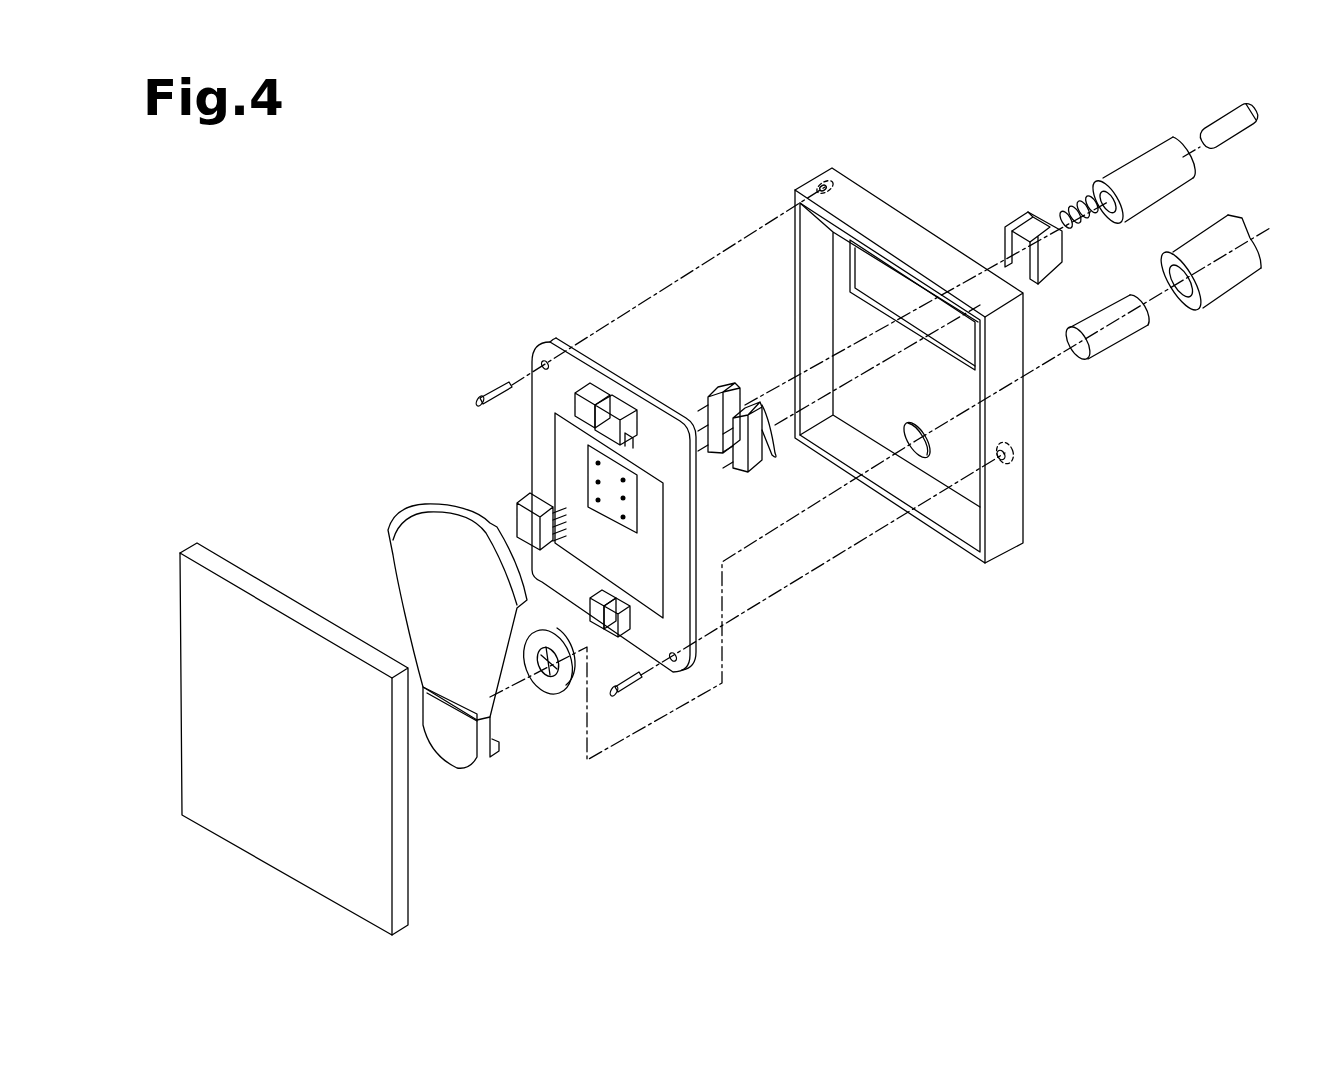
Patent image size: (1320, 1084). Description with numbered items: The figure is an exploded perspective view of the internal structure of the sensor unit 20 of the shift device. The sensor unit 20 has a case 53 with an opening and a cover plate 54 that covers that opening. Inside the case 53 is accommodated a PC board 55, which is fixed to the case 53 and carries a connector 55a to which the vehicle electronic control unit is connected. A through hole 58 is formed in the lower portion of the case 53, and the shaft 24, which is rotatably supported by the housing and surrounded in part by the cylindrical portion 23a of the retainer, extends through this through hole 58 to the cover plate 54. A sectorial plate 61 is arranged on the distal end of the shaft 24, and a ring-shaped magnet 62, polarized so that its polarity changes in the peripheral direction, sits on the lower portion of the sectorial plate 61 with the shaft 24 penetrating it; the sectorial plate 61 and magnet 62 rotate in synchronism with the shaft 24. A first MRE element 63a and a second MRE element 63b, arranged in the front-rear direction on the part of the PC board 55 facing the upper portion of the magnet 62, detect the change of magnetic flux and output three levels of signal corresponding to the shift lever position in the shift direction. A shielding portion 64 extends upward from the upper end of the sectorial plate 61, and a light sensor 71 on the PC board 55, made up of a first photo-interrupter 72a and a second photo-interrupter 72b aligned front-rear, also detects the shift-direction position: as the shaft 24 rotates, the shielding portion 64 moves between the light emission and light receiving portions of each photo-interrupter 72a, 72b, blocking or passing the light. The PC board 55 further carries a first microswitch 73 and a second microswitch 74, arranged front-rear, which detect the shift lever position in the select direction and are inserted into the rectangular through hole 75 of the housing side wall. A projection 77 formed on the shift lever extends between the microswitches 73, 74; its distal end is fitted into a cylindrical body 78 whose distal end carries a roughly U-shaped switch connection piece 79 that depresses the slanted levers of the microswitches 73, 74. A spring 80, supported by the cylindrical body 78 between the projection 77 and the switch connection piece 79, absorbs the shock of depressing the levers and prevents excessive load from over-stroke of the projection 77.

The sensor unit 20 is at (428, 312).
The cylindrical portion 23a is at (1237, 290).
The shaft 24 is at (1113, 338).
The case 53 is at (795, 318).
The cover plate 54 is at (213, 562).
The PC board 55 is at (542, 402).
The connector 55a is at (517, 518).
The through hole 58 is at (915, 422).
The sectorial plate 61 is at (380, 560).
The magnet 62 is at (540, 693).
The first MRE element 63a is at (597, 590).
The second MRE element 63b is at (613, 625).
The shielding portion 64 is at (490, 523).
The light sensor 71 is at (578, 388).
The first photo-interrupter 72a is at (625, 400).
The second photo-interrupter 72b is at (600, 387).
The first microswitch 73 is at (755, 462).
The second microswitch 74 is at (713, 392).
The rectangular through hole 75 is at (867, 253).
The projection 77 is at (1223, 115).
The cylindrical body 78 is at (1123, 173).
The switch connection piece 79 is at (1018, 217).
The spring 80 is at (1077, 210).